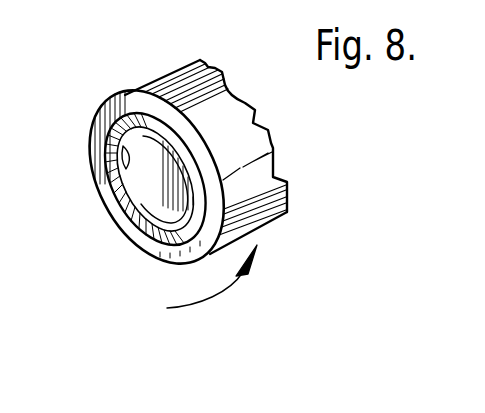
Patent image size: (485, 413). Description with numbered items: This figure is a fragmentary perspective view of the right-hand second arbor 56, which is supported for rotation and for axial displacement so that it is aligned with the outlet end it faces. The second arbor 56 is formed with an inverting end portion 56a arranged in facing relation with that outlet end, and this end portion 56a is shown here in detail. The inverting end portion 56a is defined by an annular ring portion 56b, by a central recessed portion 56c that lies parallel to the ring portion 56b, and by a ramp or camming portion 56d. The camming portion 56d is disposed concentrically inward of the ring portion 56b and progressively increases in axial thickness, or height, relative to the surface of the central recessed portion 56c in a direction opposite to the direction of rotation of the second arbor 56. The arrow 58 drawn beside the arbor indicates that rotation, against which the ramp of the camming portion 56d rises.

The second arbor 56 is at (164, 72).
The inverting end portion 56a is at (266, 131).
The annular ring portion 56b is at (140, 243).
The central recessed portion 56c is at (157, 148).
The ramp or camming portion 56d is at (128, 166).
The direction of rotation arrow 58 is at (213, 300).